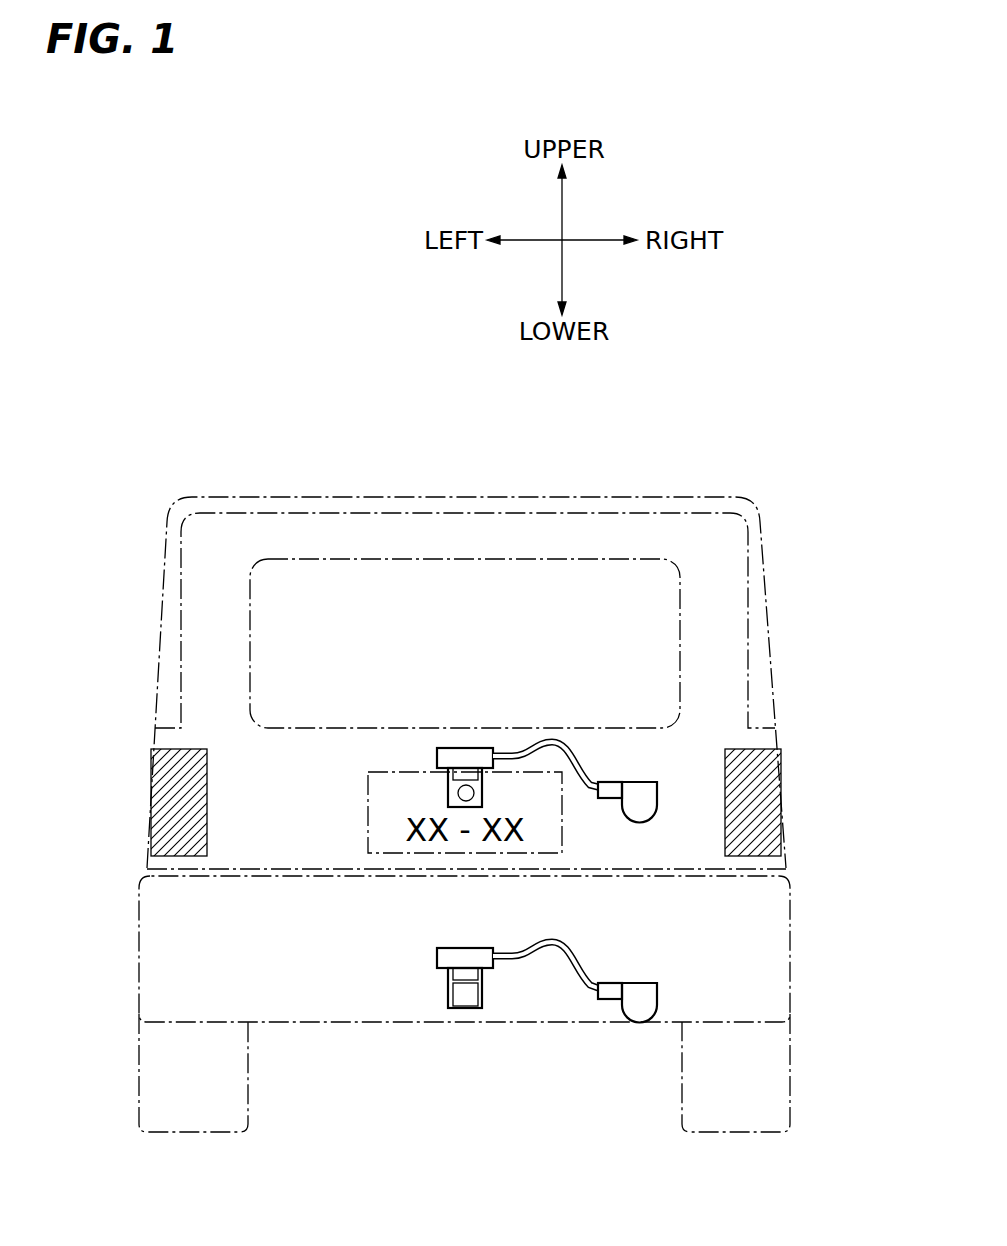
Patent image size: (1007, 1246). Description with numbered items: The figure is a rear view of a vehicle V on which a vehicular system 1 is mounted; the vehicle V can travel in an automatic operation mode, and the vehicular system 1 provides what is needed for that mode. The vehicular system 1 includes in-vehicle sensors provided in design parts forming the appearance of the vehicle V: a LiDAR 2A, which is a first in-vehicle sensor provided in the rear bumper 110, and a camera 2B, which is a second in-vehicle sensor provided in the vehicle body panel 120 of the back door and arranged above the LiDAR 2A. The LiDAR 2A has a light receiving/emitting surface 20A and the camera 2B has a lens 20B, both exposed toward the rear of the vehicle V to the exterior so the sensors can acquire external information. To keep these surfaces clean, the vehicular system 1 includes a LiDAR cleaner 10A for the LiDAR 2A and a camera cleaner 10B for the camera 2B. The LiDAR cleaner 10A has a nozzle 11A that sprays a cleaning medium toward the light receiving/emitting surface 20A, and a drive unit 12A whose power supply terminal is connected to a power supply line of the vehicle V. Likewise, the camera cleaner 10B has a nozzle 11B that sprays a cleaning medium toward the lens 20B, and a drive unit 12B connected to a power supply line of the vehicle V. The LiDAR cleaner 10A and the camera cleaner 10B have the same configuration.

The vehicular system 1 is at (708, 680).
The vehicle V is at (352, 472).
The rear bumper 110 is at (347, 950).
The vehicle body panel 120 is at (348, 748).
The LiDAR 2A is at (482, 993).
The camera 2B is at (485, 787).
The LiDAR cleaner 10A is at (480, 952).
The camera cleaner 10B is at (478, 755).
The nozzle 11A is at (460, 970).
The nozzle 11B is at (460, 770).
The drive unit 12A is at (640, 988).
The drive unit 12B is at (640, 787).
The light receiving/emitting surface 20A is at (462, 990).
The lens 20B is at (463, 792).